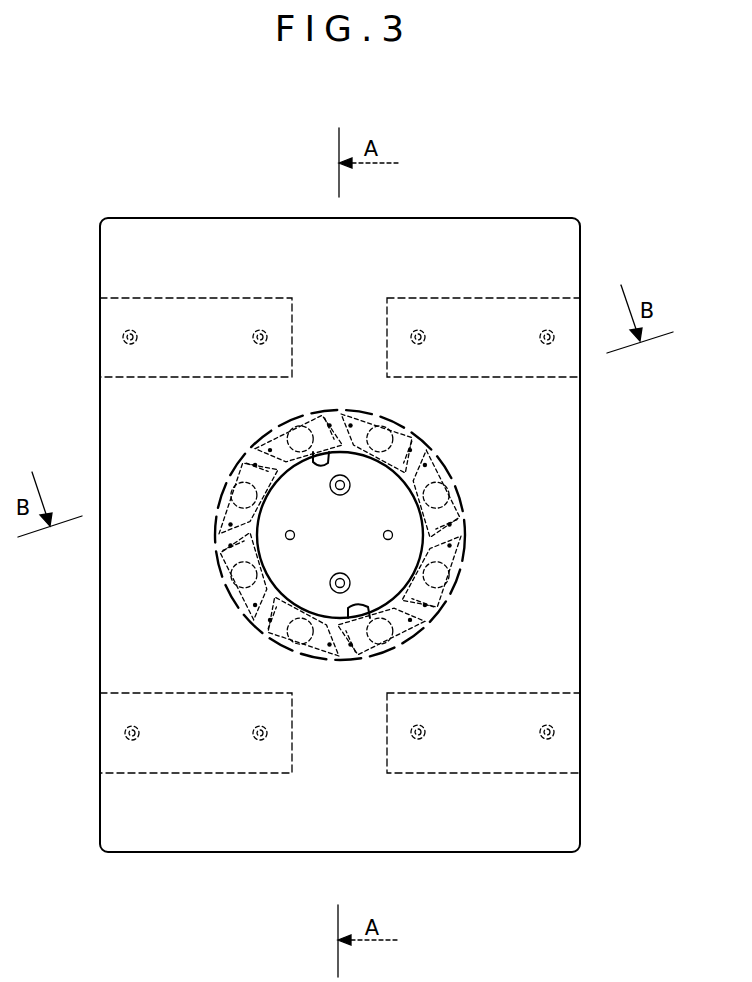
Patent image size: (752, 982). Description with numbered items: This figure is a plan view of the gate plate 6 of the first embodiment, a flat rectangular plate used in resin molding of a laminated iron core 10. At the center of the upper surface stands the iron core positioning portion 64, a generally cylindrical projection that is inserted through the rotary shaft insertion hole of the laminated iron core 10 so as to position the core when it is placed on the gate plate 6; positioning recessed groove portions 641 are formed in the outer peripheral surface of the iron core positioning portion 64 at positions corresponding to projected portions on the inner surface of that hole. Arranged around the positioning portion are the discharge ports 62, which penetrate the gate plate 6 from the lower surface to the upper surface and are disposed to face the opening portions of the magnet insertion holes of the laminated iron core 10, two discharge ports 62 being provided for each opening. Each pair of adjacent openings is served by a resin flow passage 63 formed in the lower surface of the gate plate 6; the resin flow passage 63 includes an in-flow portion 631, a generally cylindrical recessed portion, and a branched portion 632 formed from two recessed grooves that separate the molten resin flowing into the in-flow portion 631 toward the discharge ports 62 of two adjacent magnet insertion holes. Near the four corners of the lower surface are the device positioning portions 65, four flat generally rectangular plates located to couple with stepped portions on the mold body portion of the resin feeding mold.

The gate plate 6 is at (166, 142).
The laminated iron core 10 is at (257, 437).
The discharge port 62 is at (247, 477).
The resin flow passage 63 is at (225, 585).
The in-flow portion 631 is at (243, 603).
The branched portion 632 is at (207, 543).
The iron core positioning portion 64 is at (407, 537).
The positioning recessed groove portion 641 is at (338, 453).
The device positioning portion 65 is at (173, 298).